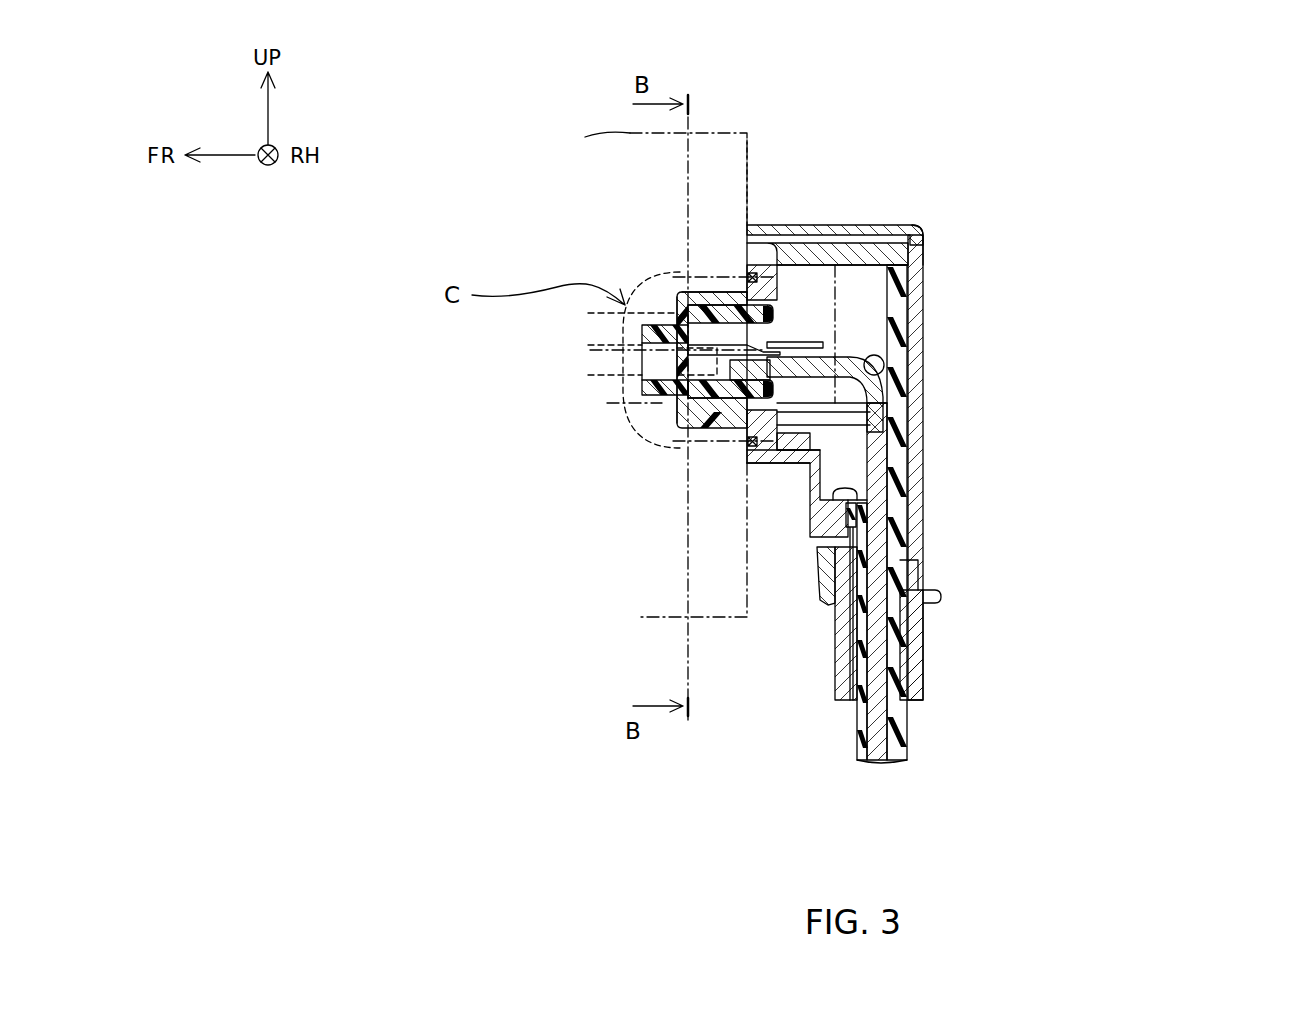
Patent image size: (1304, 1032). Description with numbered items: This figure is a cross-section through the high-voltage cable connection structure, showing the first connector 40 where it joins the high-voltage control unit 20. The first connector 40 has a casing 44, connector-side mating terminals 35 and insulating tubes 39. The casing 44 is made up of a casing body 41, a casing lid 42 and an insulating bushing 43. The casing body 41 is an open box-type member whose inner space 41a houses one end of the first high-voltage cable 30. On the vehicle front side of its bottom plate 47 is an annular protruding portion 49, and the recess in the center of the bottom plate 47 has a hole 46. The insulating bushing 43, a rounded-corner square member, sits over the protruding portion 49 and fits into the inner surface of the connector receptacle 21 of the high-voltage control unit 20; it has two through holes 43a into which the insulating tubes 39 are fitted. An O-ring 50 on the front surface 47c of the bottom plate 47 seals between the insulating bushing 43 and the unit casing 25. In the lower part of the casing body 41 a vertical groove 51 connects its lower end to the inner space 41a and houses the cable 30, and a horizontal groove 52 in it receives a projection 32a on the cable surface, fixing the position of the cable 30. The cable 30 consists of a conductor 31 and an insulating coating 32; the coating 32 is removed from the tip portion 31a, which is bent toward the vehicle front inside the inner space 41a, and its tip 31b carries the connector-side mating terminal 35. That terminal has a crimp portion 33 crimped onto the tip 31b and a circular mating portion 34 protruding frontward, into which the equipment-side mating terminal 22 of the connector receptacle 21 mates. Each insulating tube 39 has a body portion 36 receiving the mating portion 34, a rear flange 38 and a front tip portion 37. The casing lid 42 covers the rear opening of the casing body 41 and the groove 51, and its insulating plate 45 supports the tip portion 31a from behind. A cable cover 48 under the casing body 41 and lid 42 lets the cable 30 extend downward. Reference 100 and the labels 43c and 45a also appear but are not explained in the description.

The vehicle 100 is at (1158, 125).
The high-voltage control unit 20 is at (640, 140).
The connector receptacle 21 is at (677, 270).
The equipment-side mating terminal 22 is at (605, 393).
The unit casing 25 is at (747, 140).
The first high-voltage cable 30 is at (903, 778).
The conductor 31 is at (992, 601).
The tip portion 31a is at (908, 330).
The tip 31b is at (908, 420).
The insulating coating 32 is at (990, 529).
The projection 32a is at (912, 515).
The crimp portion 33 is at (800, 355).
The mating portion 34 is at (777, 340).
The connector-side mating terminal 35 is at (1105, 242).
The body portion 36 is at (705, 410).
The tip portion 37 is at (675, 400).
The flange 38 is at (752, 437).
The insulating tube 39 is at (635, 540).
The first connector 40 is at (1194, 388).
The casing body 41 is at (896, 400).
The inner space 41a is at (880, 232).
The casing lid 42 is at (852, 228).
The insulating bushing 43 is at (691, 241).
The through hole 43a is at (690, 290).
The flange outer portion 43c is at (676, 294).
The casing 44 is at (970, 45).
The insulating plate 45 is at (926, 390).
The terminal hole 45a is at (910, 392).
The hole 46 is at (822, 460).
The bottom plate 47 is at (778, 462).
The front surface 47c is at (745, 425).
The cable cover 48 is at (923, 652).
The protruding portion 49 is at (920, 255).
The O-ring 50 is at (775, 452).
The groove 51 is at (852, 530).
The horizontal groove 52 is at (818, 603).